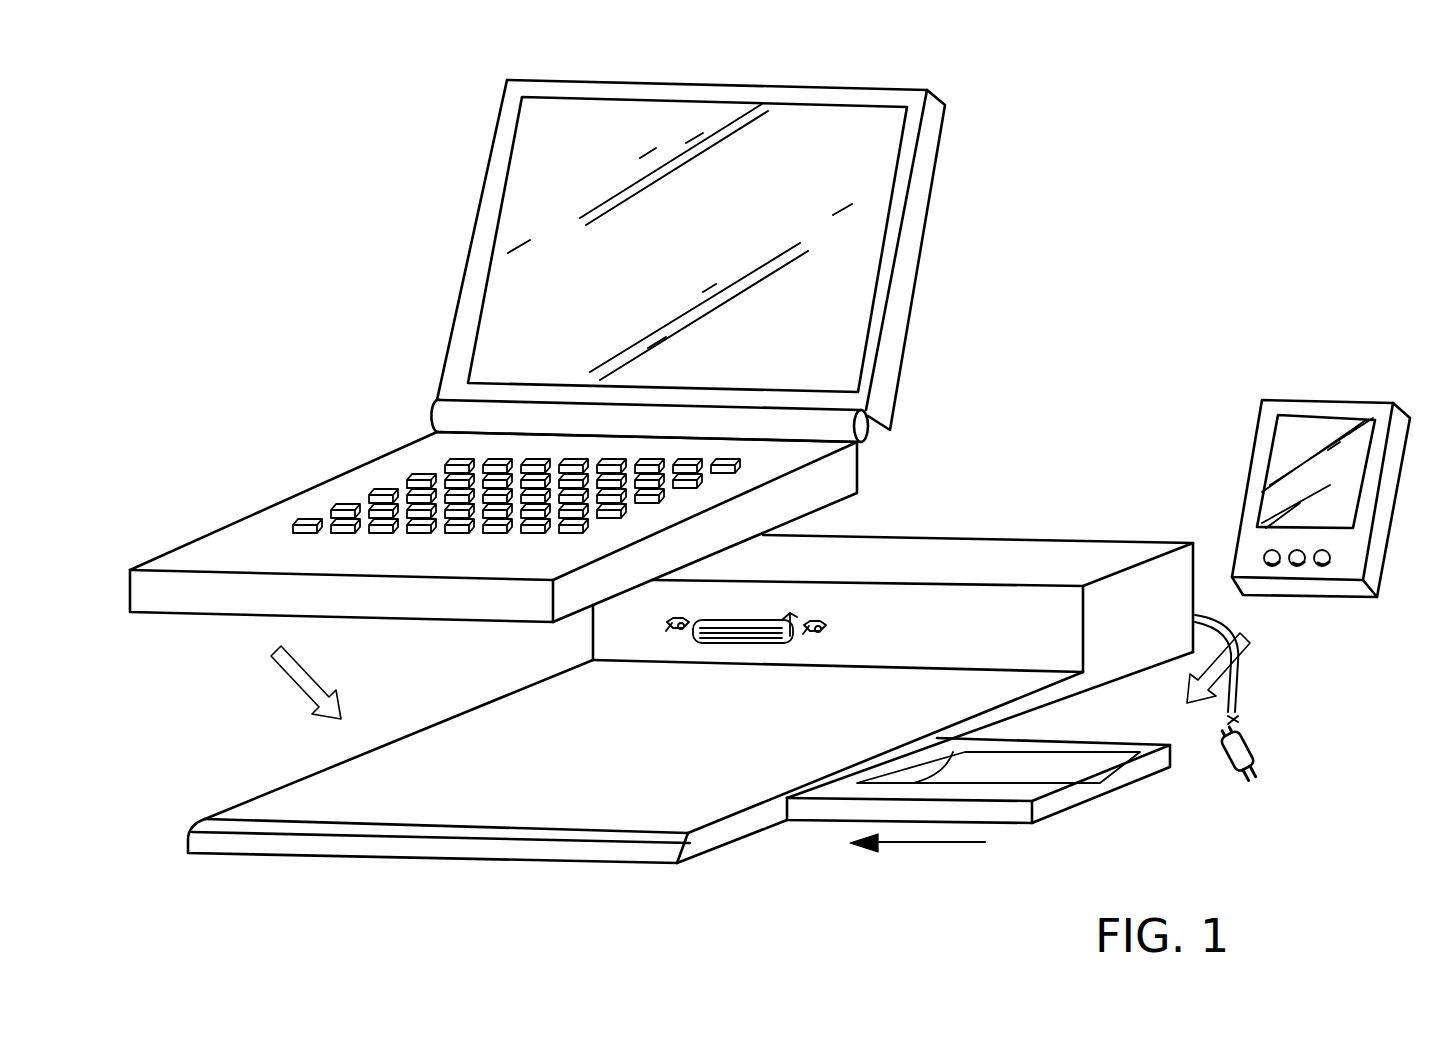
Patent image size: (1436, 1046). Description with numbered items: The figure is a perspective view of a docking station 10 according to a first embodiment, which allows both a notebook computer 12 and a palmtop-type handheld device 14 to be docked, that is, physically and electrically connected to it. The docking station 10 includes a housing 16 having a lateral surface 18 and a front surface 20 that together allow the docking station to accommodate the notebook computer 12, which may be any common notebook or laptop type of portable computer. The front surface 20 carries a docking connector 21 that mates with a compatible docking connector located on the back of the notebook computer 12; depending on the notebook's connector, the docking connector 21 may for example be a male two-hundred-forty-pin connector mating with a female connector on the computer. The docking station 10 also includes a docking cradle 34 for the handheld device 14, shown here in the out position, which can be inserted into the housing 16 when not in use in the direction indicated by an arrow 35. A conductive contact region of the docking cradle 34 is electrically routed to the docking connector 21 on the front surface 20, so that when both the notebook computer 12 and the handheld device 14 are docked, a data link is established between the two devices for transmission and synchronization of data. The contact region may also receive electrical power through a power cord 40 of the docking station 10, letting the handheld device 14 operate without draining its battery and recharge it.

The docking station 10 is at (1000, 510).
The notebook computer 12 is at (933, 182).
The palmtop-type handheld device 14 is at (1345, 398).
The housing 16 is at (1092, 535).
The lateral surface 18 is at (293, 793).
The front surface 20 is at (605, 625).
The docking connector 21 is at (772, 620).
The docking cradle 34 is at (1110, 792).
The arrow 35 is at (905, 845).
The power cord 40 is at (1244, 733).